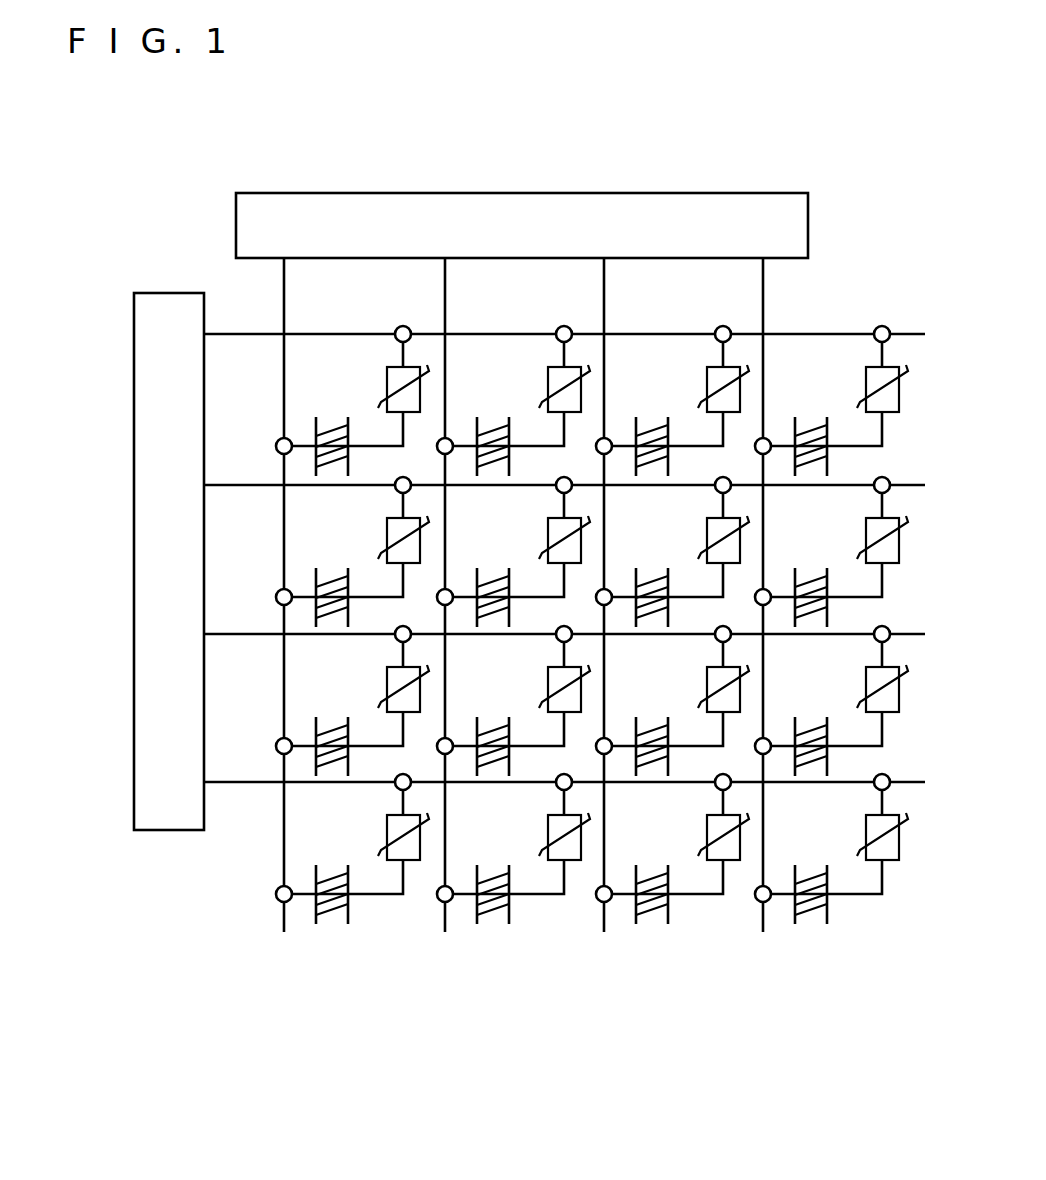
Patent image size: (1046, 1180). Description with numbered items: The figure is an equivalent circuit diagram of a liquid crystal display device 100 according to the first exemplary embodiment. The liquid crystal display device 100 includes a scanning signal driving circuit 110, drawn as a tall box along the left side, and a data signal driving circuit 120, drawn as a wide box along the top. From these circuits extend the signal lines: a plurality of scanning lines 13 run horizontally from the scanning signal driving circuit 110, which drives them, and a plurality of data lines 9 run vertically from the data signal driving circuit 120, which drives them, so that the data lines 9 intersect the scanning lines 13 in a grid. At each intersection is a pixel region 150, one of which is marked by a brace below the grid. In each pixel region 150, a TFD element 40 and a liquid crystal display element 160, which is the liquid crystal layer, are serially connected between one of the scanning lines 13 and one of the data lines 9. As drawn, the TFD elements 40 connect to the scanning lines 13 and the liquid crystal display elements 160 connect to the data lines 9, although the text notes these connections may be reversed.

The liquid crystal display device 100 is at (878, 288).
The scanning signal driving circuit 110 is at (172, 293).
The data signal driving circuit 120 is at (517, 192).
The data line 9 is at (284, 312).
The scanning line 13 is at (240, 787).
The TFD element 40 is at (414, 862).
The liquid crystal display element 160 is at (333, 924).
The pixel region 150 is at (767, 930).